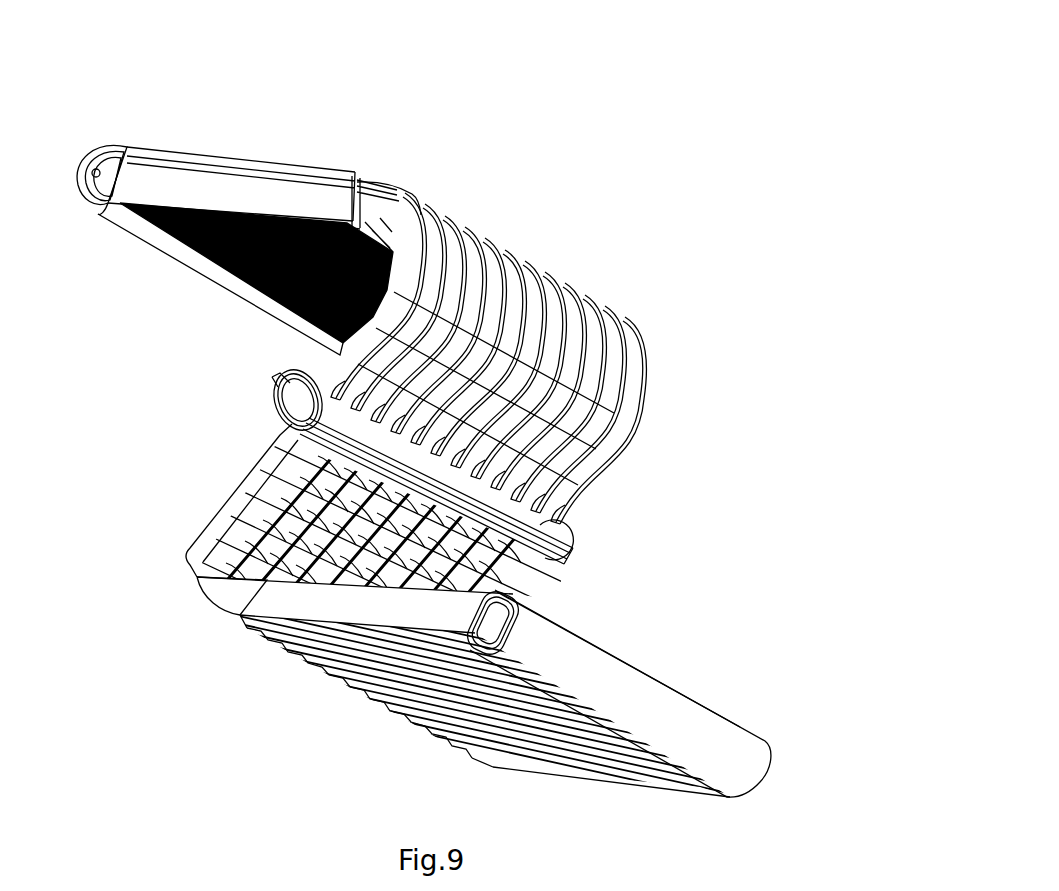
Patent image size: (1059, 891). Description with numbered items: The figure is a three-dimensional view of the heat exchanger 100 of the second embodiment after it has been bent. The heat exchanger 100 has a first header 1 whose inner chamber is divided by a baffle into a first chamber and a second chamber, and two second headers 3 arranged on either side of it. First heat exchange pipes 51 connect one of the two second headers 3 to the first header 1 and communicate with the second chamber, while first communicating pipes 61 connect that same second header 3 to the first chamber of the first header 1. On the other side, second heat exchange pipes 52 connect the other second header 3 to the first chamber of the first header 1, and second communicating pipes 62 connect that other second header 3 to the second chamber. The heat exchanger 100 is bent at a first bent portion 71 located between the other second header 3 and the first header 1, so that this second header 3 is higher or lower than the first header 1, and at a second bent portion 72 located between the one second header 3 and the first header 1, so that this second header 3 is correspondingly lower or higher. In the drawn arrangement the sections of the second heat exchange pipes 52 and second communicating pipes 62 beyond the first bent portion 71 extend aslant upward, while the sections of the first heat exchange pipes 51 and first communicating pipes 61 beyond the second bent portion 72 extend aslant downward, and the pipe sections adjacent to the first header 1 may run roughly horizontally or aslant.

The heat exchanger 100 is at (643, 66).
The second headers 3 is at (107, 142).
The second heat exchange pipes 52 is at (397, 203).
The second communicating pipes 62 is at (416, 195).
The first bent portion 71 is at (660, 352).
The second bent portion 72 is at (163, 548).
The first header 1 is at (556, 533).
The first heat exchange pipes 51 is at (217, 587).
The first communicating pipes 61 is at (224, 623).